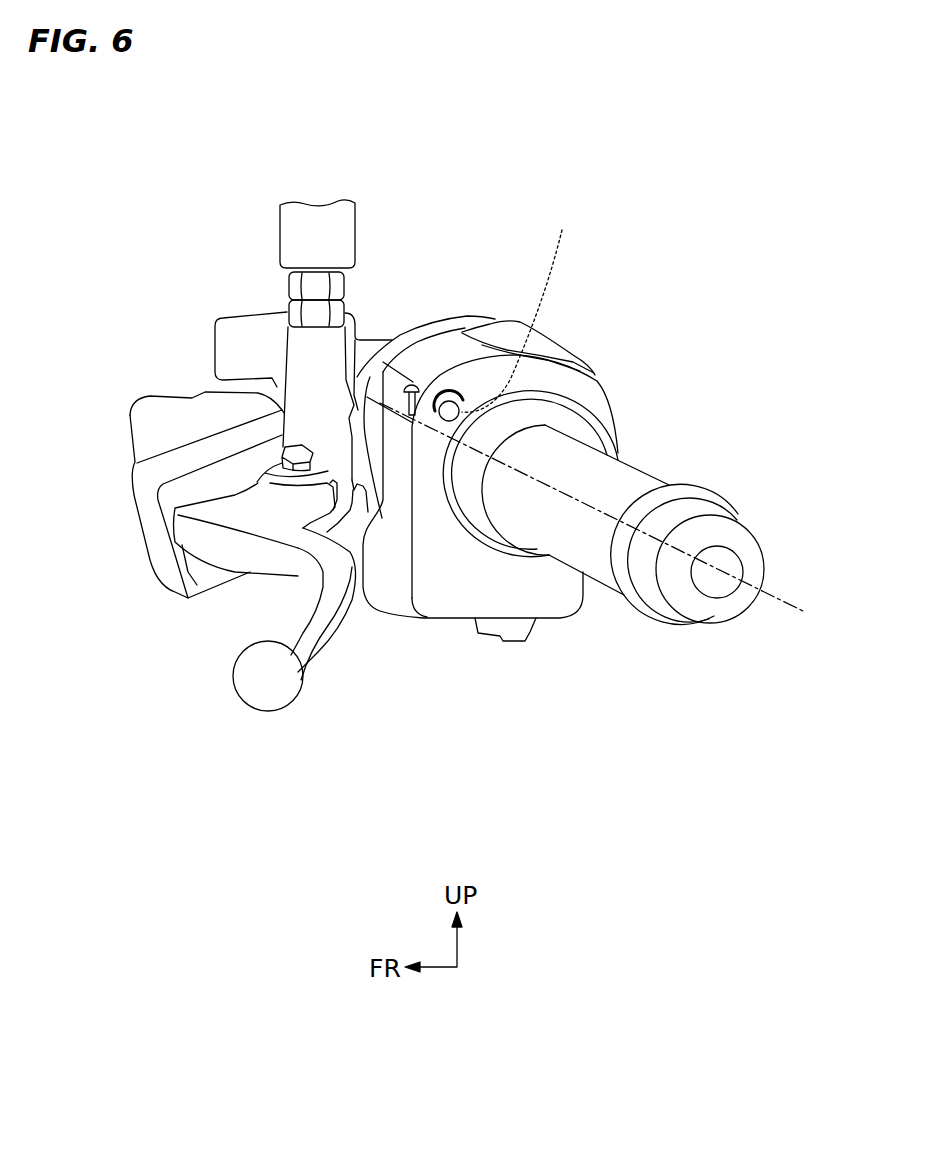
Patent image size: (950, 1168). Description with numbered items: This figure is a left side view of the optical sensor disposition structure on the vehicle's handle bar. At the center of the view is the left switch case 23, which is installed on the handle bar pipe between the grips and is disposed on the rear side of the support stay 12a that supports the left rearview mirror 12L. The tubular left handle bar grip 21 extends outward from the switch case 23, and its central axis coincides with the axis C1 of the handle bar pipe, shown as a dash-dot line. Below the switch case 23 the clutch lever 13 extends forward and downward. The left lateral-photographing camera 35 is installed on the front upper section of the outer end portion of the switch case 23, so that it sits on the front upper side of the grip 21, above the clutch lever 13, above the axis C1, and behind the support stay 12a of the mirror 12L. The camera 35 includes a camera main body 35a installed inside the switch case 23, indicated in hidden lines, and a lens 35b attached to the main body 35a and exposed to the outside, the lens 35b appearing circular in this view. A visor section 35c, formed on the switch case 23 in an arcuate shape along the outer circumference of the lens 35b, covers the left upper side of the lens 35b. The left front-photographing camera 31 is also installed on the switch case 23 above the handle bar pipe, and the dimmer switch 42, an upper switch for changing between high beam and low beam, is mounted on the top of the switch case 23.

The left rearview mirror 12L is at (290, 233).
The support stay 12a is at (297, 353).
The clutch lever 13 is at (318, 657).
The left handle bar grip 21 is at (607, 573).
The left switch case 23 is at (448, 602).
The left front-photographing camera 31 is at (370, 377).
The left lateral-photographing camera 35 is at (499, 287).
The camera main body 35a is at (472, 196).
The lens 35b is at (453, 405).
The visor section 35c is at (450, 390).
The dimmer switch 42 is at (578, 357).
The axis of the handle bar pipe C1 is at (785, 595).